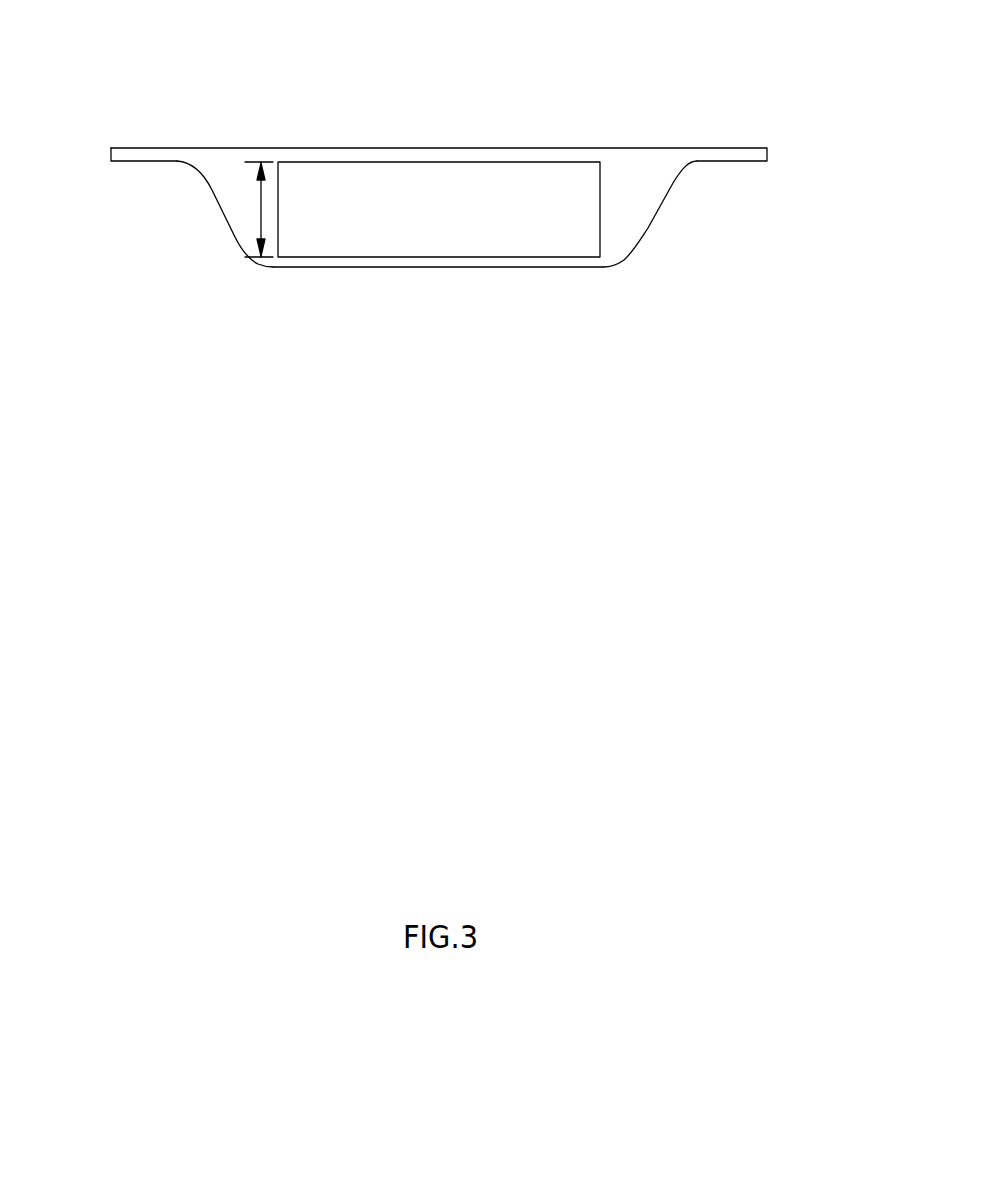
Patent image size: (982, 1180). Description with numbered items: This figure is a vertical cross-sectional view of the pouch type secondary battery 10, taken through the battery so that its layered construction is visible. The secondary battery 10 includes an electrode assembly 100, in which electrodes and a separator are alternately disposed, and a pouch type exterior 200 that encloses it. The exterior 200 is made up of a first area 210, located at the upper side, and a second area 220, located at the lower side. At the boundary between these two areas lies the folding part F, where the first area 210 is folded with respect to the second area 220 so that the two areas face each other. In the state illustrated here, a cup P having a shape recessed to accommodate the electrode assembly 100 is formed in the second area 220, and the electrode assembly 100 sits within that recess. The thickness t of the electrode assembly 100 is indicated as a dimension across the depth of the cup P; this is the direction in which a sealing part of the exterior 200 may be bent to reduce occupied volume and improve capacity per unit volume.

The pouch type secondary battery 10 is at (454, 88).
The electrode assembly 100 is at (532, 230).
The pouch type exterior 200 is at (758, 38).
The first area 210 is at (600, 148).
The second area 220 is at (437, 268).
The folding part F is at (111, 153).
The cup P is at (622, 195).
The thickness t is at (261, 211).